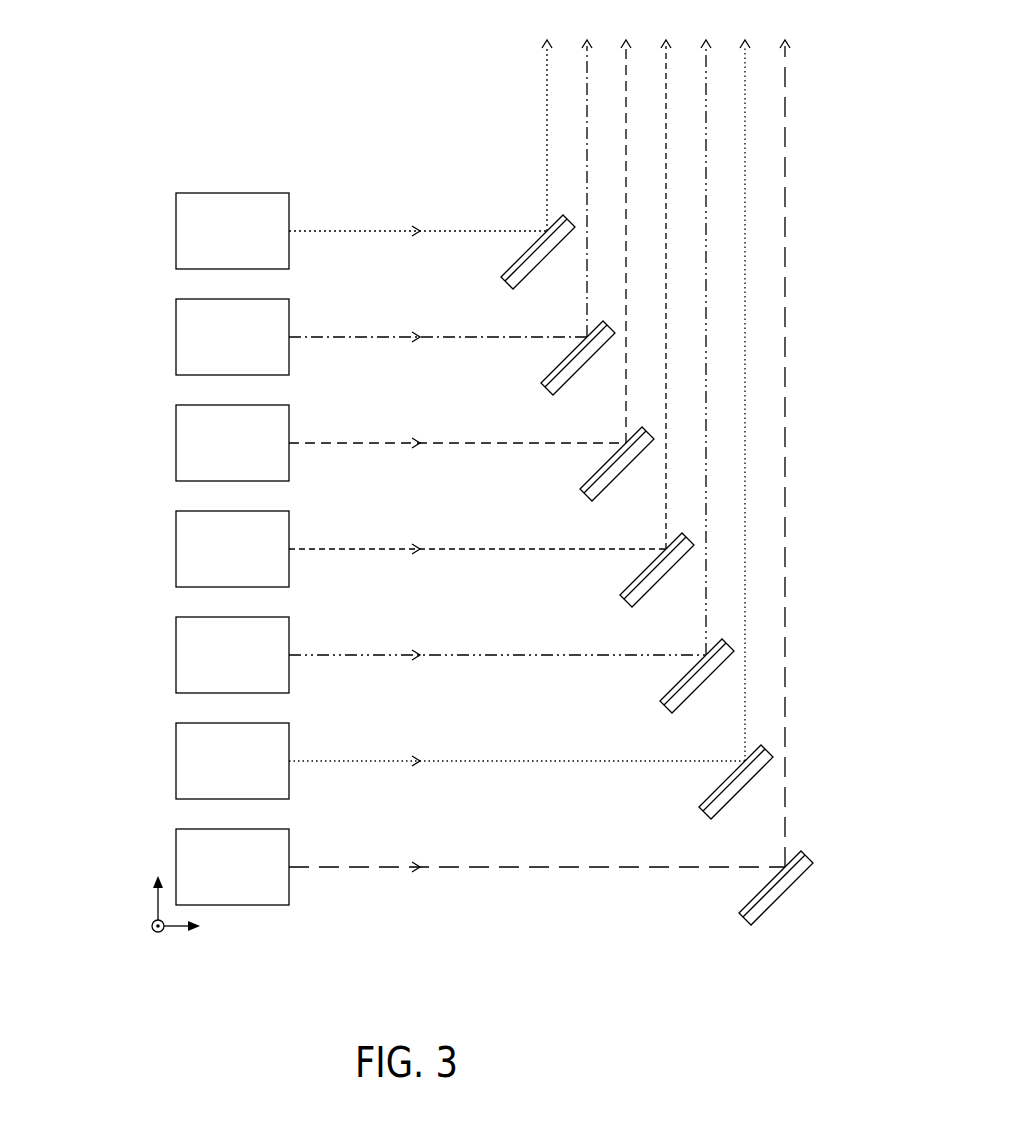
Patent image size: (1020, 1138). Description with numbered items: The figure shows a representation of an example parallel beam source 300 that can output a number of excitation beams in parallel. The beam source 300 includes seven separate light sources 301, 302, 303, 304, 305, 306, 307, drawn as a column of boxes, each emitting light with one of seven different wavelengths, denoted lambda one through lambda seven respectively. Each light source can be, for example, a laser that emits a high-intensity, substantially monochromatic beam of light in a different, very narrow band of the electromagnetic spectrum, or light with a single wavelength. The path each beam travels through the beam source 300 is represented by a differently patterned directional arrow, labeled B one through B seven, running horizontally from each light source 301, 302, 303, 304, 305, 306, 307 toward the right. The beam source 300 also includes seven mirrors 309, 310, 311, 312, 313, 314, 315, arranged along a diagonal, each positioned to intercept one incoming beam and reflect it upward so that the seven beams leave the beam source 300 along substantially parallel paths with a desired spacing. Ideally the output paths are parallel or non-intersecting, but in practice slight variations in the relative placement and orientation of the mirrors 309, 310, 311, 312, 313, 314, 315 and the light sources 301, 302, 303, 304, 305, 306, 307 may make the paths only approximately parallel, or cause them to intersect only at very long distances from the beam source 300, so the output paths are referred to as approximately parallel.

The parallel beam source 300 is at (224, 106).
The light source 301 is at (176, 231).
The light source 302 is at (176, 337).
The light source 303 is at (176, 443).
The light source 304 is at (176, 549).
The light source 305 is at (176, 655).
The light source 306 is at (176, 761).
The light source 307 is at (176, 852).
The mirror 309 is at (495, 267).
The mirror 310 is at (535, 373).
The mirror 311 is at (574, 479).
The mirror 312 is at (614, 585).
The mirror 313 is at (653, 691).
The mirror 314 is at (692, 797).
The mirror 315 is at (732, 903).